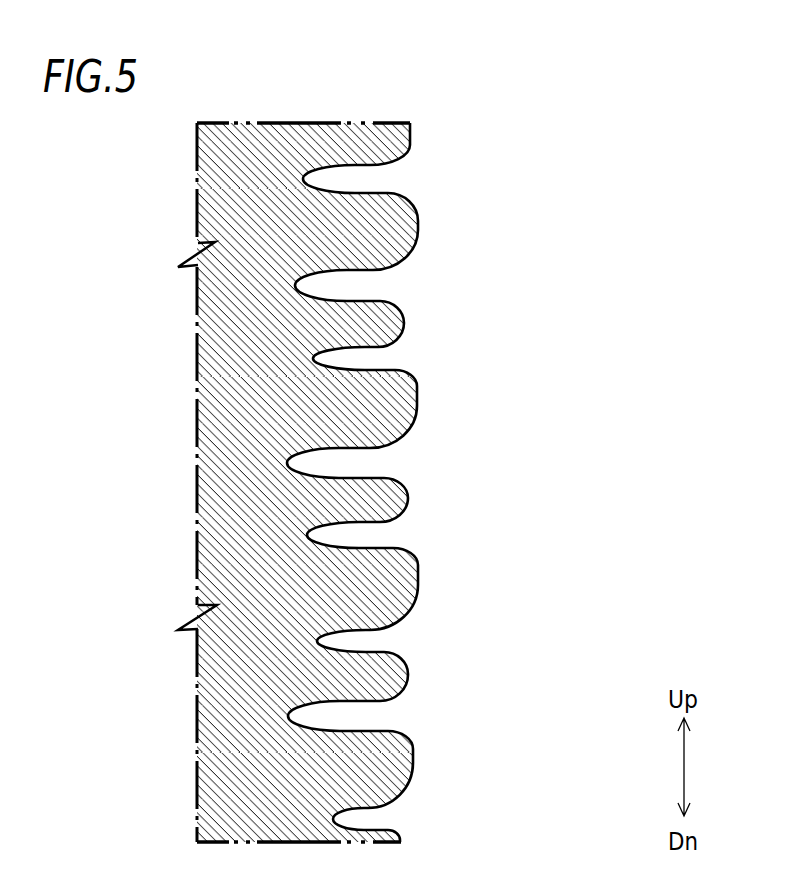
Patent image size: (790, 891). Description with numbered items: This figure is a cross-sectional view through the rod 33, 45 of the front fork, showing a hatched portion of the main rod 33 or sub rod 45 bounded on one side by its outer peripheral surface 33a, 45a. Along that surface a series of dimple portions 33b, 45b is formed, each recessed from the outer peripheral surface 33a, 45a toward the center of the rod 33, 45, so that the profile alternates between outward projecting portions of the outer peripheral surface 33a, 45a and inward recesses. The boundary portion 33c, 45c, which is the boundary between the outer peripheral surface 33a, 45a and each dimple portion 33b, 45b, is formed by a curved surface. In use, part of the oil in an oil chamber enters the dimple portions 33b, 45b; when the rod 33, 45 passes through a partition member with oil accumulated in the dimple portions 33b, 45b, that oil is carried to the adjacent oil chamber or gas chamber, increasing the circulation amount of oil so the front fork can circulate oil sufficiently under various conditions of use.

The main rod 33 is at (230, 482).
The sub rod 45 is at (245, 476).
The outer peripheral surface 33a is at (442, 550).
The outer peripheral surface 45a is at (406, 319).
The dimple portion 33b is at (221, 506).
The dimple portion 45b is at (340, 362).
The boundary portion 33c is at (471, 539).
The boundary portion 45c is at (398, 371).